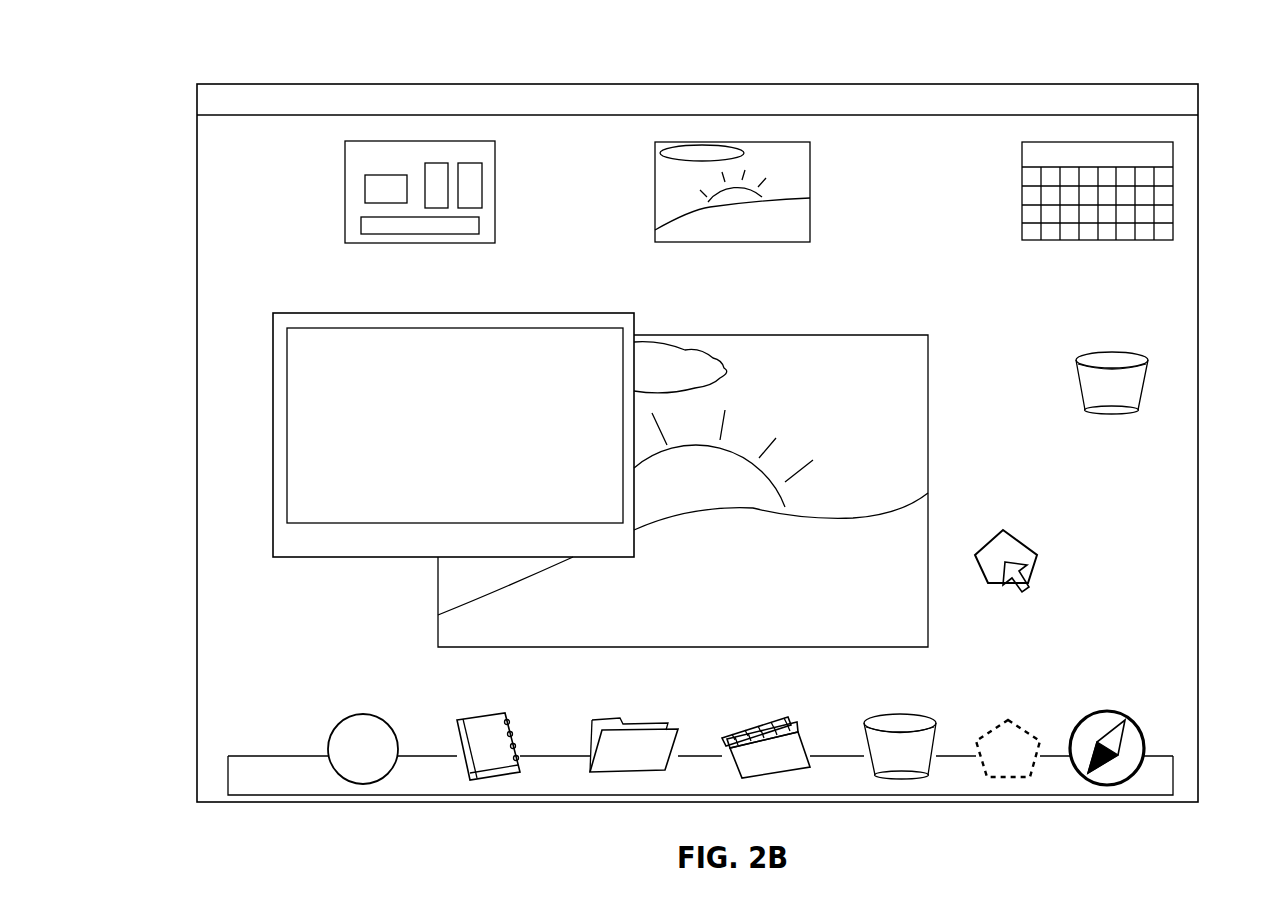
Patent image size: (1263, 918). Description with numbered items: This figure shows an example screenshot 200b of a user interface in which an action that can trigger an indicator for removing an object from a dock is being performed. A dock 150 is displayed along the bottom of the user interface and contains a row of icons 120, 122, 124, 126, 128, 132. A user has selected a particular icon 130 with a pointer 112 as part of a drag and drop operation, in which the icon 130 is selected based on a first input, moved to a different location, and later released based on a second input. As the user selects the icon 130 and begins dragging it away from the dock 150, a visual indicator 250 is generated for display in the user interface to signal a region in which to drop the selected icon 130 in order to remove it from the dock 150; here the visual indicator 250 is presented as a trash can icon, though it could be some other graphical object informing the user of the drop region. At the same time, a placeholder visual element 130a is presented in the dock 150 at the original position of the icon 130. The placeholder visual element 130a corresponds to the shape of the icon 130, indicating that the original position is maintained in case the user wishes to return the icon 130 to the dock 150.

The screenshot 200b is at (127, 94).
The visual indicator 250 is at (1157, 383).
The icon 130 is at (1003, 530).
The pointer 112 is at (1029, 590).
The dock 150 is at (228, 775).
The icon 120 is at (330, 726).
The icon 122 is at (465, 720).
The icon 124 is at (592, 725).
The icon 126 is at (732, 735).
The icon 128 is at (875, 717).
The placeholder visual element 130a is at (1007, 720).
The icon 132 is at (1130, 728).